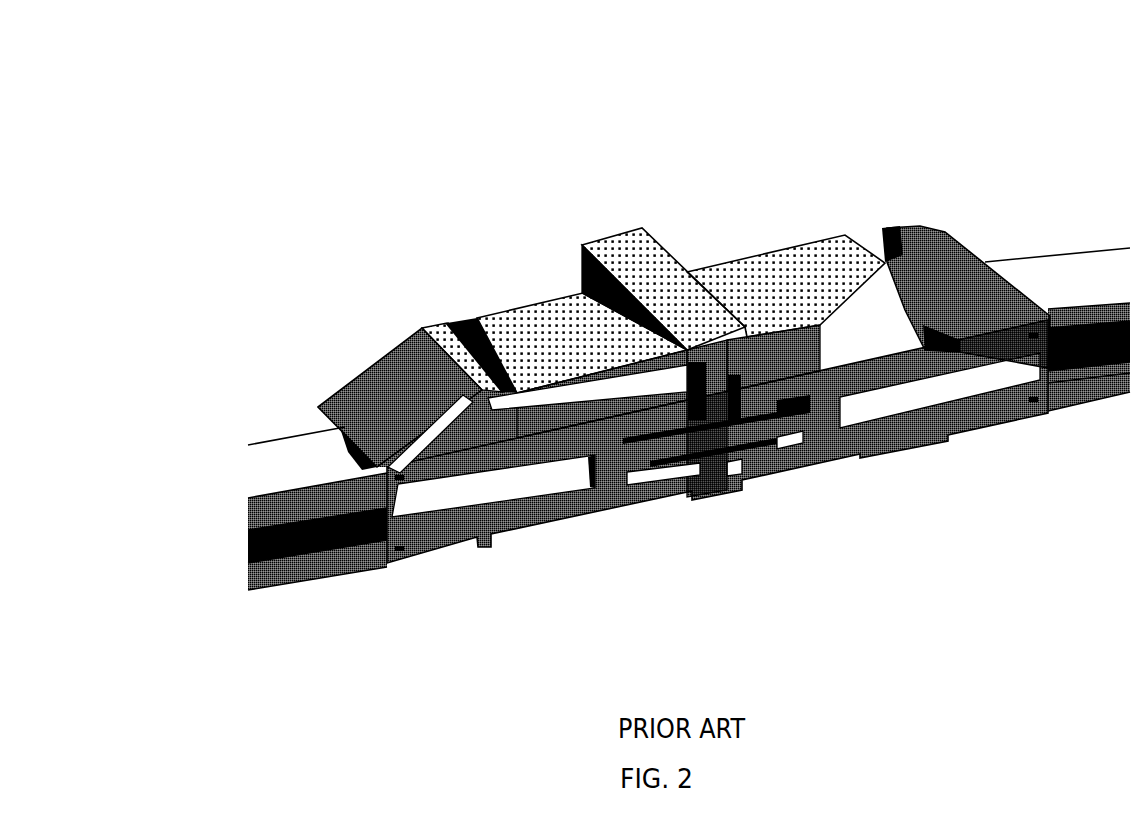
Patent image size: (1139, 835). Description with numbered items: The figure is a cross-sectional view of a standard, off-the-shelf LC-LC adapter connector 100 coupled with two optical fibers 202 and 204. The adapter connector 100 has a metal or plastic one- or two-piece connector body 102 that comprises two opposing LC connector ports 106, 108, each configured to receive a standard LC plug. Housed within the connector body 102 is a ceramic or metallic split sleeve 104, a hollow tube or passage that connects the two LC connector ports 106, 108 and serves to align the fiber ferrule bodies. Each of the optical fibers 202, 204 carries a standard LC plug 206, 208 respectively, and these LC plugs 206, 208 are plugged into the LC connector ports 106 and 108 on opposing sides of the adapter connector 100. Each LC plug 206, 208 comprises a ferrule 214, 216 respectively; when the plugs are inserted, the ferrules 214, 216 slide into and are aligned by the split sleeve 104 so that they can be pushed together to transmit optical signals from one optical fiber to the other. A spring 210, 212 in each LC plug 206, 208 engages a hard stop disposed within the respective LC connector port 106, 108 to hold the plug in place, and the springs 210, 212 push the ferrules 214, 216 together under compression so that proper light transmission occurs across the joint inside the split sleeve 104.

The LC-LC adapter connector 100 is at (305, 172).
The connector body 102 is at (507, 347).
The split sleeve 104 is at (833, 502).
The LC connector port 106 is at (577, 332).
The LC connector port 108 is at (799, 285).
The optical fiber 202 is at (293, 537).
The optical fiber 204 is at (1070, 310).
The LC plug 206 is at (487, 497).
The LC plug 208 is at (926, 380).
The spring 210 is at (530, 416).
The spring 212 is at (886, 330).
The ferrule 214 is at (658, 458).
The ferrule 216 is at (762, 423).